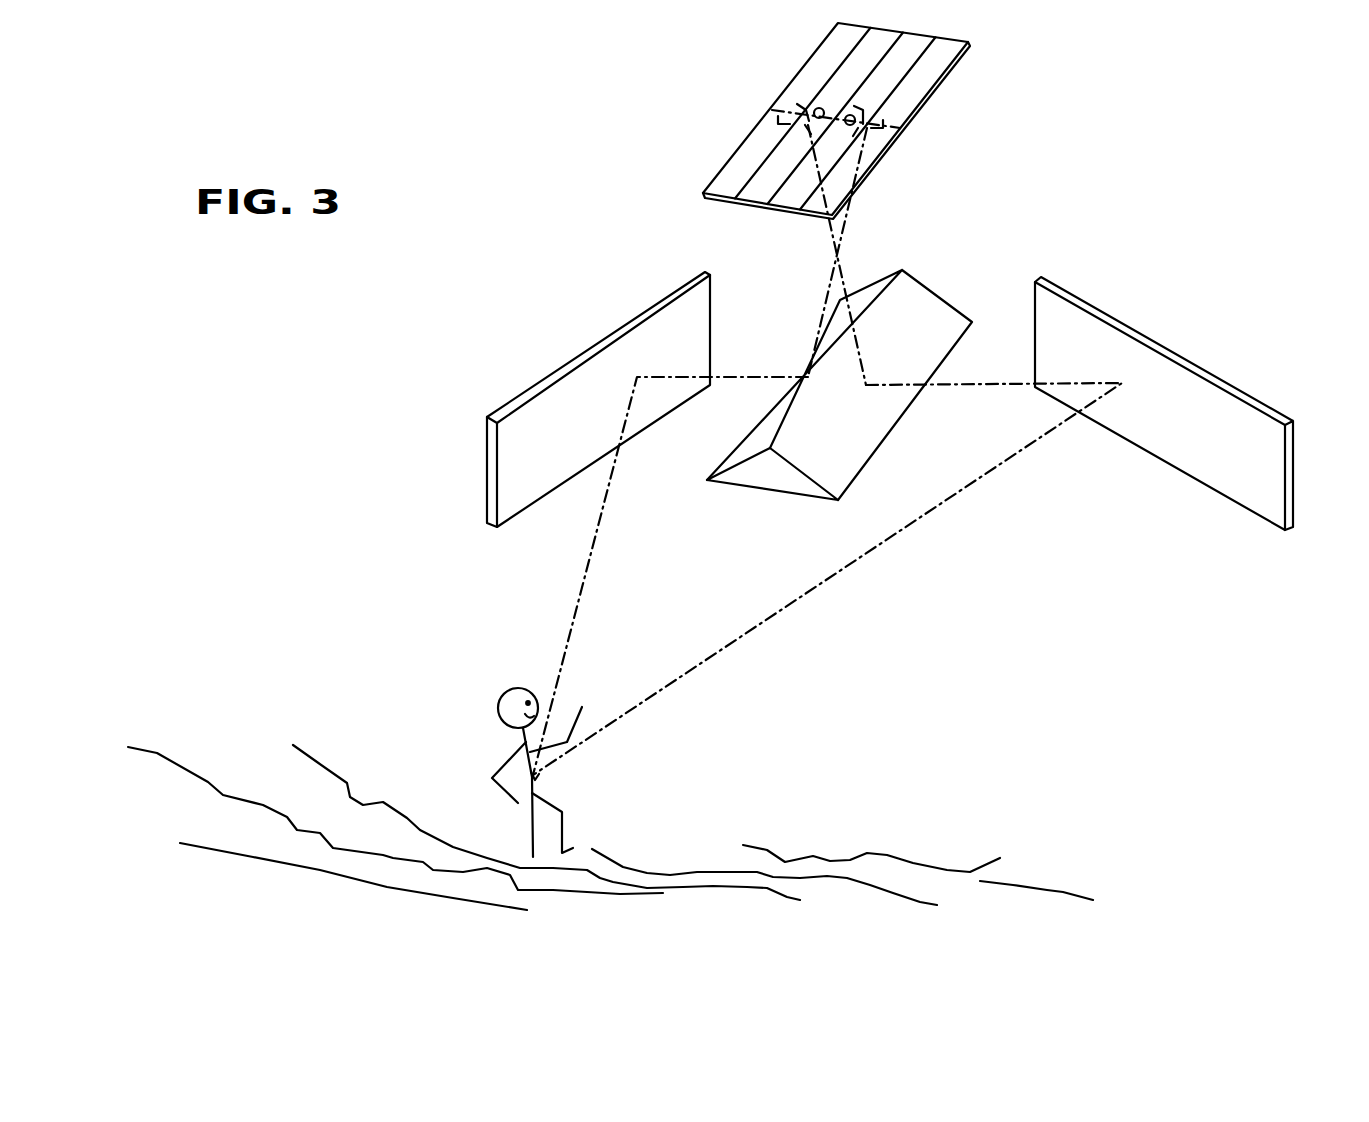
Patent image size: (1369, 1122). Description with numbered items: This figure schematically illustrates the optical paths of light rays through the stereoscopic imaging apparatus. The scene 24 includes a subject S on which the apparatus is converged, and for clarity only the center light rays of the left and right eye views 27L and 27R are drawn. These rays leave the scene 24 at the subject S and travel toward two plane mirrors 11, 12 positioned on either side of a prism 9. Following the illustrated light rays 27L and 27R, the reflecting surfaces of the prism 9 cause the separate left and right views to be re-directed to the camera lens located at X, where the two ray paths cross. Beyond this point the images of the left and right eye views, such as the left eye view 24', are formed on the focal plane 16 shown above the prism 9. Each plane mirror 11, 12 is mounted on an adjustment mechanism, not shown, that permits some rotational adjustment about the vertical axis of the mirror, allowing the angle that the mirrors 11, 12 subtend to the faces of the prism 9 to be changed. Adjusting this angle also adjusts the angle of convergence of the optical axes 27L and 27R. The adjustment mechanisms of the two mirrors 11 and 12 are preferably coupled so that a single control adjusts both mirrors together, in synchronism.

The focal plane 16 is at (730, 205).
The left eye view image 24' is at (766, 97).
The camera lens location X is at (835, 244).
The plane mirror 11 is at (597, 388).
The plane mirror 12 is at (1164, 403).
The prism 9 is at (850, 448).
The right eye view light ray 27R is at (605, 503).
The left eye view light ray 27L is at (843, 568).
The subject S is at (497, 702).
The scene 24 is at (598, 796).